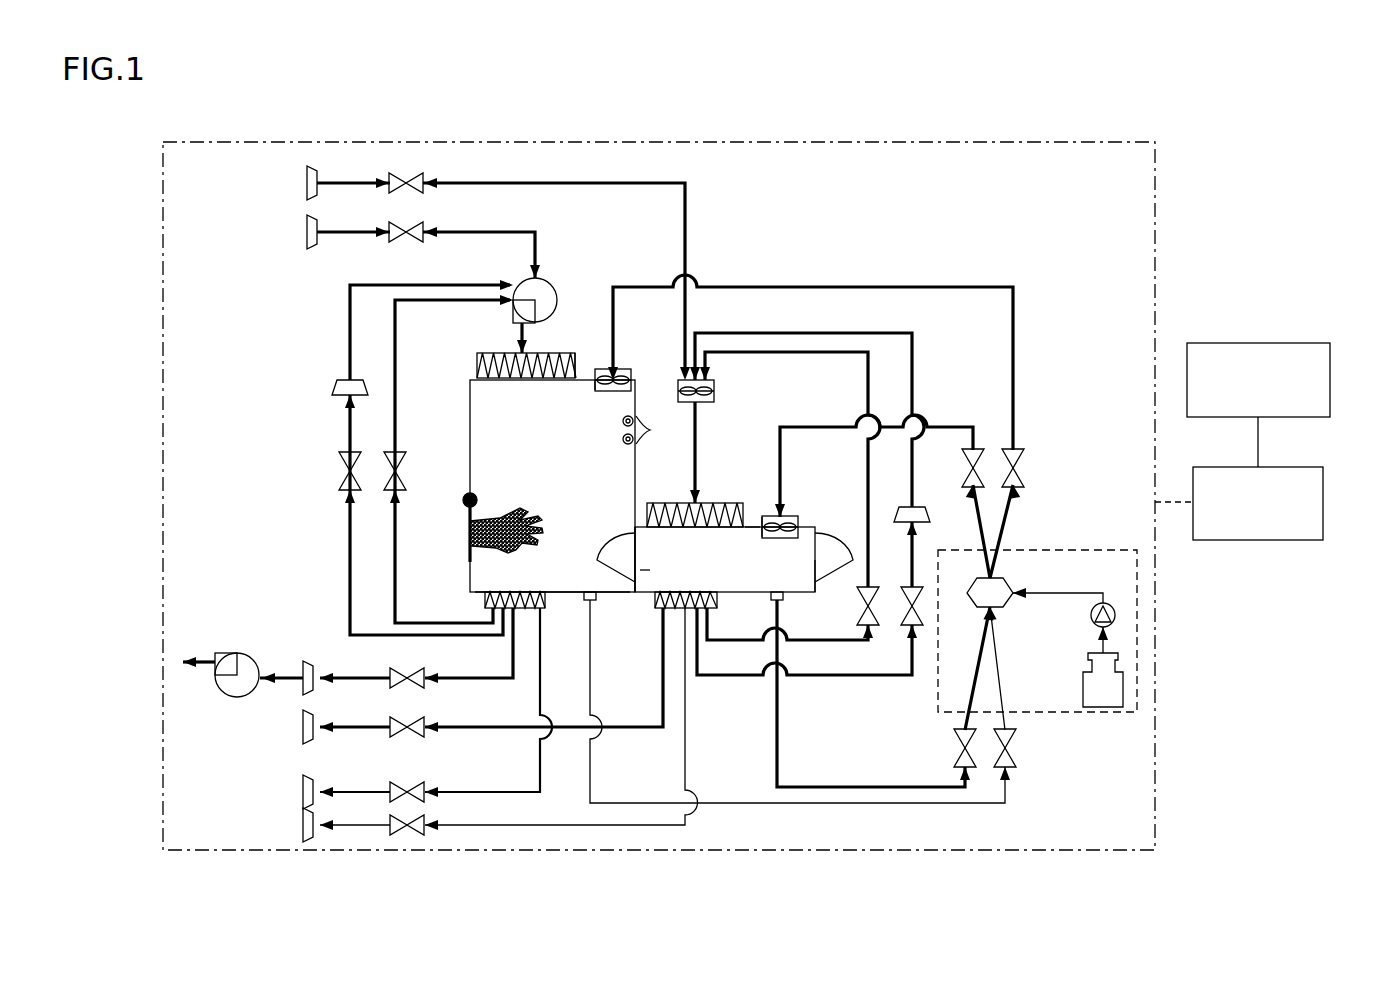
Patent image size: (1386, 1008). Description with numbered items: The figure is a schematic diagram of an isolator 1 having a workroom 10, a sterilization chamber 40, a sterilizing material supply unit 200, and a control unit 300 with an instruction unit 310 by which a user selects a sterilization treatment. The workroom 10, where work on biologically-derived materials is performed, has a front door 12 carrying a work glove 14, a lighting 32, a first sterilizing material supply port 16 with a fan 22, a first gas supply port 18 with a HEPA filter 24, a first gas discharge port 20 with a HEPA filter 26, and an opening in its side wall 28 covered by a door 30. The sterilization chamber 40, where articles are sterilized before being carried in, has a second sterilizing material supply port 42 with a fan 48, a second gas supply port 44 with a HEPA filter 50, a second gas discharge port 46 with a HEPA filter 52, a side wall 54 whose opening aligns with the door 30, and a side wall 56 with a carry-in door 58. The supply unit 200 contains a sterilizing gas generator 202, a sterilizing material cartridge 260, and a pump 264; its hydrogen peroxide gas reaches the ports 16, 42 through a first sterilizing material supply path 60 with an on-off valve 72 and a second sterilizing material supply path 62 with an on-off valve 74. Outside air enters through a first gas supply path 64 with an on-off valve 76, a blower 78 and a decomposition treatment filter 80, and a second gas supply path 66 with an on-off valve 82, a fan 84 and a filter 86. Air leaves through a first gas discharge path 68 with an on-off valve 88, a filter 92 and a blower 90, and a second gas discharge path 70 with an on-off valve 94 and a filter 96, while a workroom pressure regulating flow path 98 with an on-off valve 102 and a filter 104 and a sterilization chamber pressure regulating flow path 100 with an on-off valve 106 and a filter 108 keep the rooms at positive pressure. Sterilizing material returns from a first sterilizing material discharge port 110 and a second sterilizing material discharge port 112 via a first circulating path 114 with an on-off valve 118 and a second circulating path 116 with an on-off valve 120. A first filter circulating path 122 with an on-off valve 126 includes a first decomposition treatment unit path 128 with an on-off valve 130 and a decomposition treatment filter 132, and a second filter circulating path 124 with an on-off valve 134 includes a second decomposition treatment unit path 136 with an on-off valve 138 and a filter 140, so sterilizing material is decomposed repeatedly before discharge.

The isolator 1 is at (698, 901).
The workroom 10 is at (468, 425).
The front door 12 is at (467, 556).
The work glove 14 is at (503, 518).
The first sterilizing material supply port 16 is at (595, 382).
The first gas supply port 18 is at (520, 380).
The first gas discharge port 20 is at (535, 592).
The fan 22 is at (622, 370).
The HEPA filter 24 is at (572, 358).
The HEPA filter 26 is at (484, 602).
The side wall 28 is at (636, 486).
The door 30 is at (624, 538).
The lighting 32 is at (654, 433).
The sterilization chamber 40 is at (814, 518).
The second sterilizing material supply port 42 is at (795, 516).
The second gas supply port 44 is at (742, 527).
The second gas discharge port 46 is at (699, 602).
The fan 48 is at (761, 516).
The HEPA filter 50 is at (661, 503).
The HEPA filter 52 is at (655, 610).
The side wall 54 is at (642, 584).
The side wall 56 is at (816, 592).
The carry-in door 58 is at (828, 562).
The first sterilizing material supply path 60 is at (939, 288).
The second sterilizing material supply path 62 is at (946, 428).
The first gas supply path 64 is at (341, 230).
The second gas supply path 66 is at (341, 182).
The first gas discharge path 68 is at (286, 665).
The second gas discharge path 70 is at (364, 726).
The on-off valve 72 is at (1018, 448).
The on-off valve 74 is at (978, 448).
The on-off valve 76 is at (426, 229).
The blower 78 is at (546, 284).
The sterilizing material decomposition treatment filter 80 is at (306, 231).
The on-off valve 82 is at (426, 182).
The fan 84 is at (716, 390).
The sterilizing material decomposition treatment filter 86 is at (306, 182).
The on-off valve 88 is at (405, 674).
The blower 90 is at (235, 654).
The sterilizing material decomposition treatment filter 92 is at (315, 664).
The on-off valve 94 is at (405, 724).
The sterilizing material decomposition treatment filter 96 is at (298, 734).
The workroom pressure regulating flow path 98 is at (541, 652).
The sterilization chamber pressure regulating flow path 100 is at (685, 722).
The on-off valve 102 is at (422, 794).
The sterilizing material decomposition treatment filter 104 is at (300, 798).
The on-off valve 106 is at (424, 826).
The sterilizing material decomposition treatment filter 108 is at (300, 831).
The first sterilizing material discharge port 110 is at (598, 610).
The second sterilizing material discharge port 112 is at (785, 605).
The first circulating path 114 is at (593, 668).
The second circulating path 116 is at (780, 743).
The on-off valve 118 is at (1010, 752).
The on-off valve 120 is at (955, 752).
The first filter circulating path 122 is at (398, 335).
The second filter circulating path 124 is at (866, 382).
The on-off valve 126 is at (406, 476).
The first decomposition treatment unit path 128 is at (348, 333).
The on-off valve 130 is at (338, 476).
The sterilizing material decomposition treatment filter 132 is at (338, 384).
The on-off valve 134 is at (872, 587).
The second decomposition treatment unit path 136 is at (910, 347).
The on-off valve 138 is at (900, 618).
The sterilizing material decomposition treatment filter 140 is at (916, 504).
The sterilizing material supply unit 200 is at (1107, 544).
The sterilizing gas generator 202 is at (1012, 582).
The sterilizing material cartridge 260 is at (1082, 684).
The pump 264 is at (1104, 602).
The control unit 300 is at (1324, 478).
The instruction unit 310 is at (1331, 352).